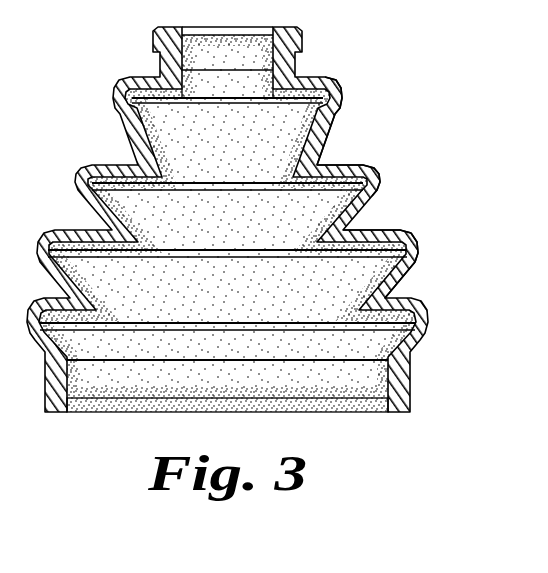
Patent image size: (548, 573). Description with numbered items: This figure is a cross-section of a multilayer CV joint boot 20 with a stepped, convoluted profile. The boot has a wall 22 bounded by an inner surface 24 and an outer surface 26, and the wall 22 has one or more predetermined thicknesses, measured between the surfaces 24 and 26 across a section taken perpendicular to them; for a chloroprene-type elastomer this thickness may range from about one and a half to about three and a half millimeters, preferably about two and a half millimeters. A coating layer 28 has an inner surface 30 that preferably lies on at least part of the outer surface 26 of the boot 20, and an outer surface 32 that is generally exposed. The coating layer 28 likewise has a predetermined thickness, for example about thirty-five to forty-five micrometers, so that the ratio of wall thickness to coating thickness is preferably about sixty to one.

The boot 20 is at (326, 45).
The wall 22 is at (339, 108).
The inner surface 24 is at (313, 147).
The outer surface 26 is at (356, 166).
The coating layer 28 is at (402, 233).
The inner surface of coating layer 30 is at (417, 257).
The outer surface of coating layer 32 is at (418, 268).